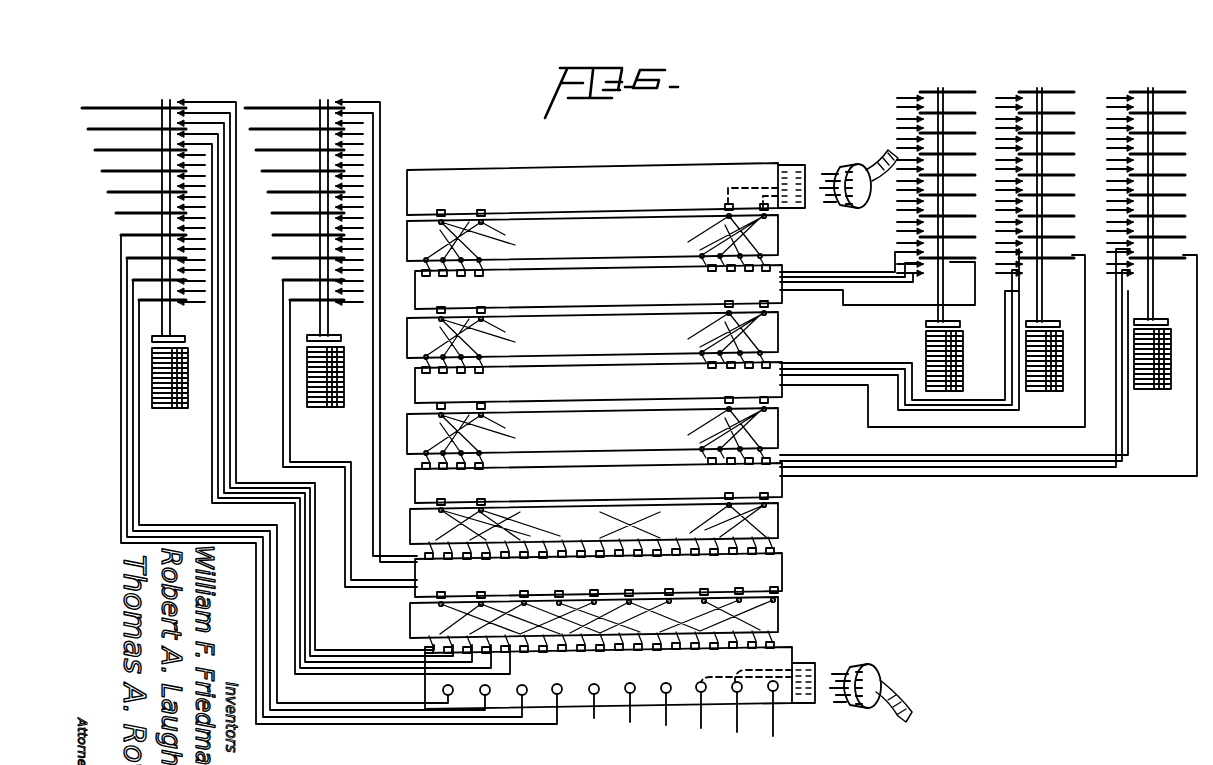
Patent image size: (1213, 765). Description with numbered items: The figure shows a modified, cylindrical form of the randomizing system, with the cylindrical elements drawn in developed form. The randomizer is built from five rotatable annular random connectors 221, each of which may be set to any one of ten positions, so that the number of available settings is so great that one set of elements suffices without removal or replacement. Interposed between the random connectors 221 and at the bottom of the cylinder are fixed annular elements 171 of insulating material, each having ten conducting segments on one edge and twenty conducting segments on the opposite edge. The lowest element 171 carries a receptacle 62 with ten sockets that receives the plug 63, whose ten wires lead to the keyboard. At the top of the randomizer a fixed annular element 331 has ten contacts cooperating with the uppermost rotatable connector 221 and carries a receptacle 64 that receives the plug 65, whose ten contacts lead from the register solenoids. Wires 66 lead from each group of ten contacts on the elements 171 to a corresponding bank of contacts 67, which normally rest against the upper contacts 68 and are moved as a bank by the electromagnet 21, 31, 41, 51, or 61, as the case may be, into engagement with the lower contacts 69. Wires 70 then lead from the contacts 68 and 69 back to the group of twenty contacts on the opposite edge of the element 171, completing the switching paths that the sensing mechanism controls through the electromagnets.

The electromagnet 21 is at (185, 410).
The electromagnet 31 is at (326, 408).
The electromagnet 41 is at (964, 356).
The electromagnet 51 is at (1056, 386).
The electromagnet 61 is at (1164, 386).
The receptacle 62 is at (805, 705).
The plug 63 is at (874, 667).
The receptacle 64 is at (787, 166).
The plug 65 is at (852, 166).
The wires 66 is at (121, 372).
The bank of contacts 67 is at (164, 112).
The upper contacts 68 is at (180, 108).
The lower contacts 69 is at (200, 118).
The wires 70 is at (236, 424).
The fixed annular element 171 is at (603, 500).
The annular random connector 221 is at (788, 228).
The fixed annular element 331 is at (599, 170).